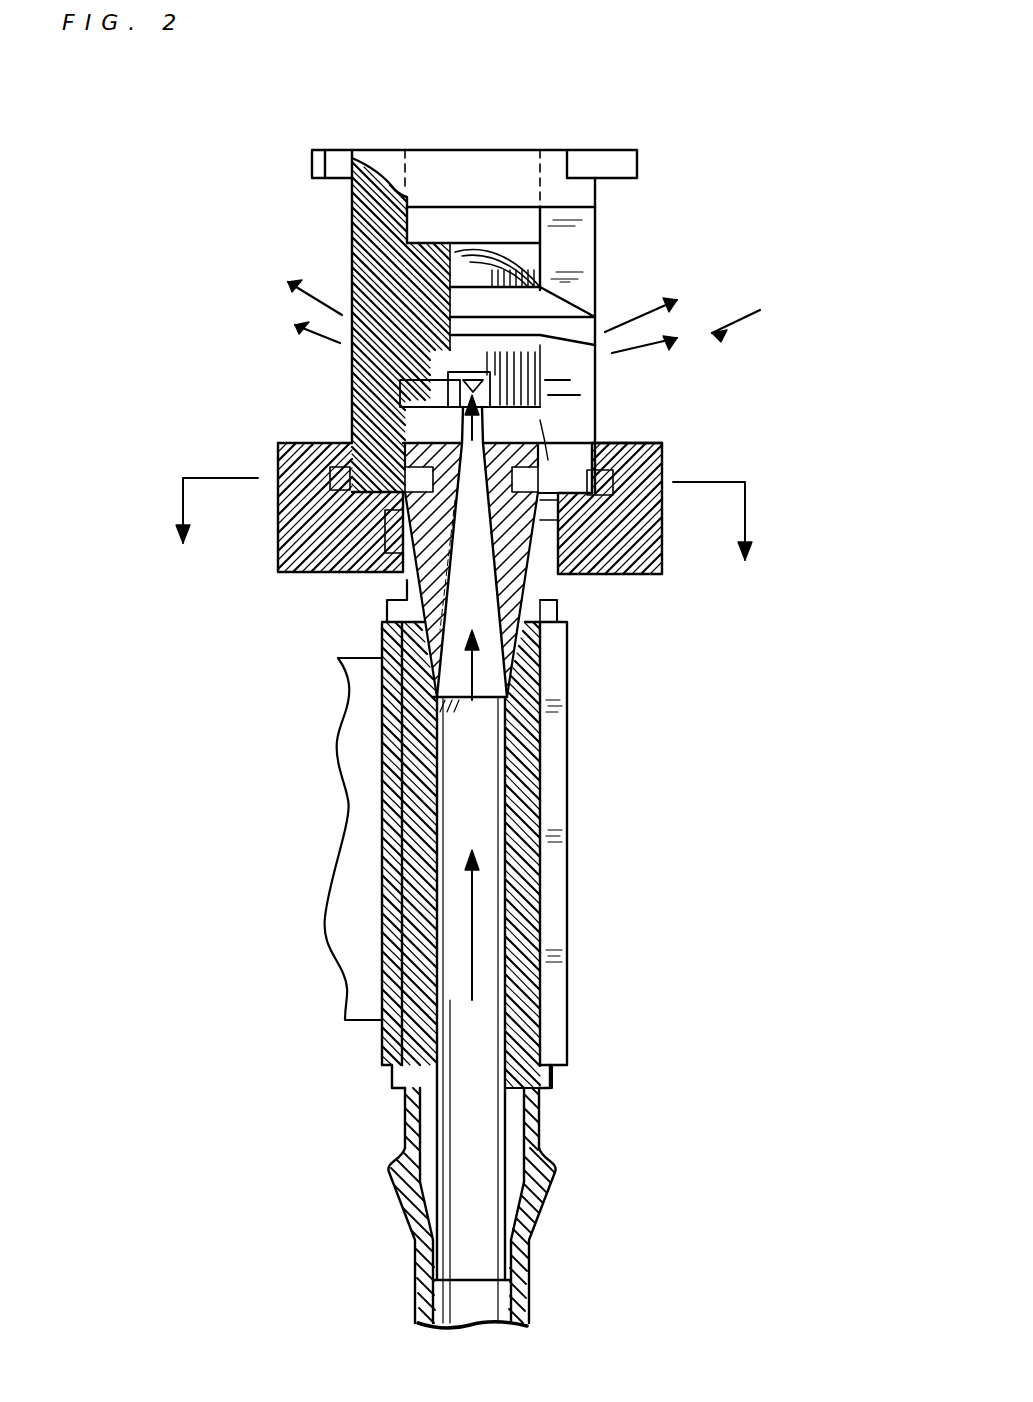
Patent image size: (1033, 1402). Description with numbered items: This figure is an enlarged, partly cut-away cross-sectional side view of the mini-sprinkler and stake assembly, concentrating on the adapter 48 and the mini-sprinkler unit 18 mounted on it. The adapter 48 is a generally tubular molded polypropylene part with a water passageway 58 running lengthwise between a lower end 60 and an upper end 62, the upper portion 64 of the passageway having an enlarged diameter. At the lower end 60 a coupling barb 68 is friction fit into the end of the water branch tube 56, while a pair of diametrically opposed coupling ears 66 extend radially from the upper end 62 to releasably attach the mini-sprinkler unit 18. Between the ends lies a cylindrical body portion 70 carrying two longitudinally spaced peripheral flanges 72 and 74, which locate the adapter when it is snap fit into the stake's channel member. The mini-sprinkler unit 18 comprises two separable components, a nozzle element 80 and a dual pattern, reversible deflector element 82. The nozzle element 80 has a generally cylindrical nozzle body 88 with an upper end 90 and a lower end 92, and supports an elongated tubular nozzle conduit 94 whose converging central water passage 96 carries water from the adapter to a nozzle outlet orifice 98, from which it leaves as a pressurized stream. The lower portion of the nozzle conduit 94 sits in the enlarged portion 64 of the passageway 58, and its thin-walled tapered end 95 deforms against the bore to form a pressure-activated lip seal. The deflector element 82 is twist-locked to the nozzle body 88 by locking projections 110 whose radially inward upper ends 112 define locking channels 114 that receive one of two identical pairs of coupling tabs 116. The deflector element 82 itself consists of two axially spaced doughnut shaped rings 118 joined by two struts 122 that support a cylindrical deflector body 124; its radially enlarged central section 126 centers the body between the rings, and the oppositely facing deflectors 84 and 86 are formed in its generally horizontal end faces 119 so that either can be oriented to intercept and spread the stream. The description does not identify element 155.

The mini-sprinkler unit 18 is at (760, 310).
The adapter 48 is at (378, 1080).
The water branch tube 56 is at (410, 1130).
The water passageway 58 is at (495, 820).
The lower end 60 is at (438, 1290).
The upper end 62 is at (570, 513).
The upper portion of the passageway 64 is at (545, 655).
The coupling ears 66 is at (395, 565).
The coupling barb 68 is at (545, 1200).
The cylindrical body portion 70 is at (520, 950).
The peripheral flange 72 is at (385, 618).
The peripheral flange 74 is at (555, 1088).
The nozzle element 80 is at (283, 578).
The deflector element 82 is at (640, 335).
The deflector 84 is at (490, 195).
The deflector 86 is at (597, 400).
The nozzle body 88 is at (640, 540).
The upper end of nozzle body 90 is at (660, 578).
The lower end of nozzle body 92 is at (300, 442).
The nozzle conduit 94 is at (395, 590).
The tapered end 95 is at (510, 700).
The central water passage 96 is at (435, 695).
The nozzle outlet orifice 98 is at (452, 428).
The locking projections 110 is at (288, 515).
The upper ends 112 is at (342, 440).
The locking channels 114 is at (428, 240).
The coupling tabs 116 is at (312, 165).
The doughnut shaped rings 118 is at (370, 165).
The end faces 119 is at (550, 430).
The struts 122 is at (372, 365).
The deflector body 124 is at (410, 258).
The central section 126 is at (602, 330).
The air passage 155 is at (597, 368).